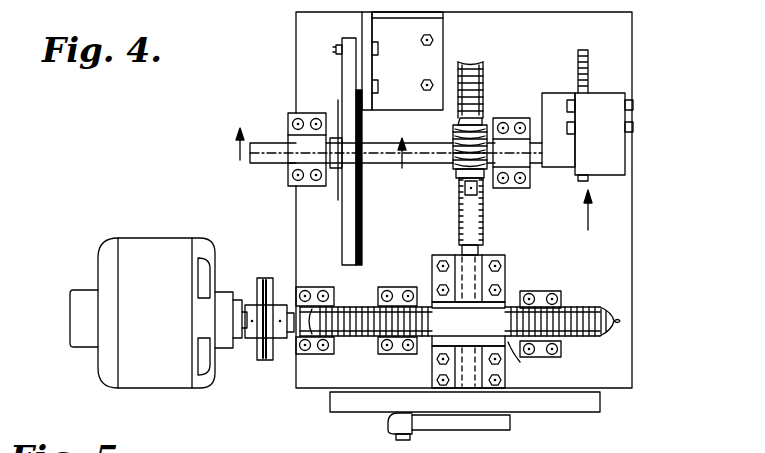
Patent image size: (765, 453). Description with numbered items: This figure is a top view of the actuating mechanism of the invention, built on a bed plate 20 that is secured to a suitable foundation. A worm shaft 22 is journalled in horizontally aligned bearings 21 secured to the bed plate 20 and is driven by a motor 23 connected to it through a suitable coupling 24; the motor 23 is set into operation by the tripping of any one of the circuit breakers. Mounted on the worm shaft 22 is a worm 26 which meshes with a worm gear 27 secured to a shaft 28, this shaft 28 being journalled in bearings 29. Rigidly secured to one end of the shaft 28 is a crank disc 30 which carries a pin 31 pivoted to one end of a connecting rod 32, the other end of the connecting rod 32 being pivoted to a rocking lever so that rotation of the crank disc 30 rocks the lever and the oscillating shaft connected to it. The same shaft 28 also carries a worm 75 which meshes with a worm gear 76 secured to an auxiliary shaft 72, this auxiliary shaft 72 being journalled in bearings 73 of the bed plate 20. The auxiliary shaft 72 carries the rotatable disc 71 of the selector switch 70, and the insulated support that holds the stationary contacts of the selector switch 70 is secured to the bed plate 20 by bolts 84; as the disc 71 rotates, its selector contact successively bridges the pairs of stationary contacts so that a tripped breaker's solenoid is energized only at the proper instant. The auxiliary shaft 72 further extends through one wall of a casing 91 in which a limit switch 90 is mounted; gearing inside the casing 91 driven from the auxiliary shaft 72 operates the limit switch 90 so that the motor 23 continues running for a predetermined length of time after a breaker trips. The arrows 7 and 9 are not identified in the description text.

The direction arrow 7 is at (319, 160).
The direction arrow 9 is at (594, 210).
The bed plate 20 is at (632, 248).
The bearings 21 is at (314, 354).
The worm shaft 22 is at (283, 342).
The motor 23 is at (178, 390).
The coupling 24 is at (259, 282).
The worm 26 is at (524, 362).
The worm gear 27 is at (362, 300).
The shaft 28 is at (473, 248).
The bearings 29 is at (470, 282).
The crank disc 30 is at (597, 412).
The pin 31 is at (395, 437).
The connecting rod 32 is at (497, 428).
The selector switch 70 is at (405, 86).
The rotatable disc 71 is at (358, 250).
The auxiliary shaft 72 is at (428, 164).
The bearings 73 is at (300, 160).
The worm 75 is at (480, 124).
The worm gear 76 is at (470, 63).
The bolts 84 is at (436, 42).
The limit switch 90 is at (609, 117).
The casing 91 is at (632, 172).